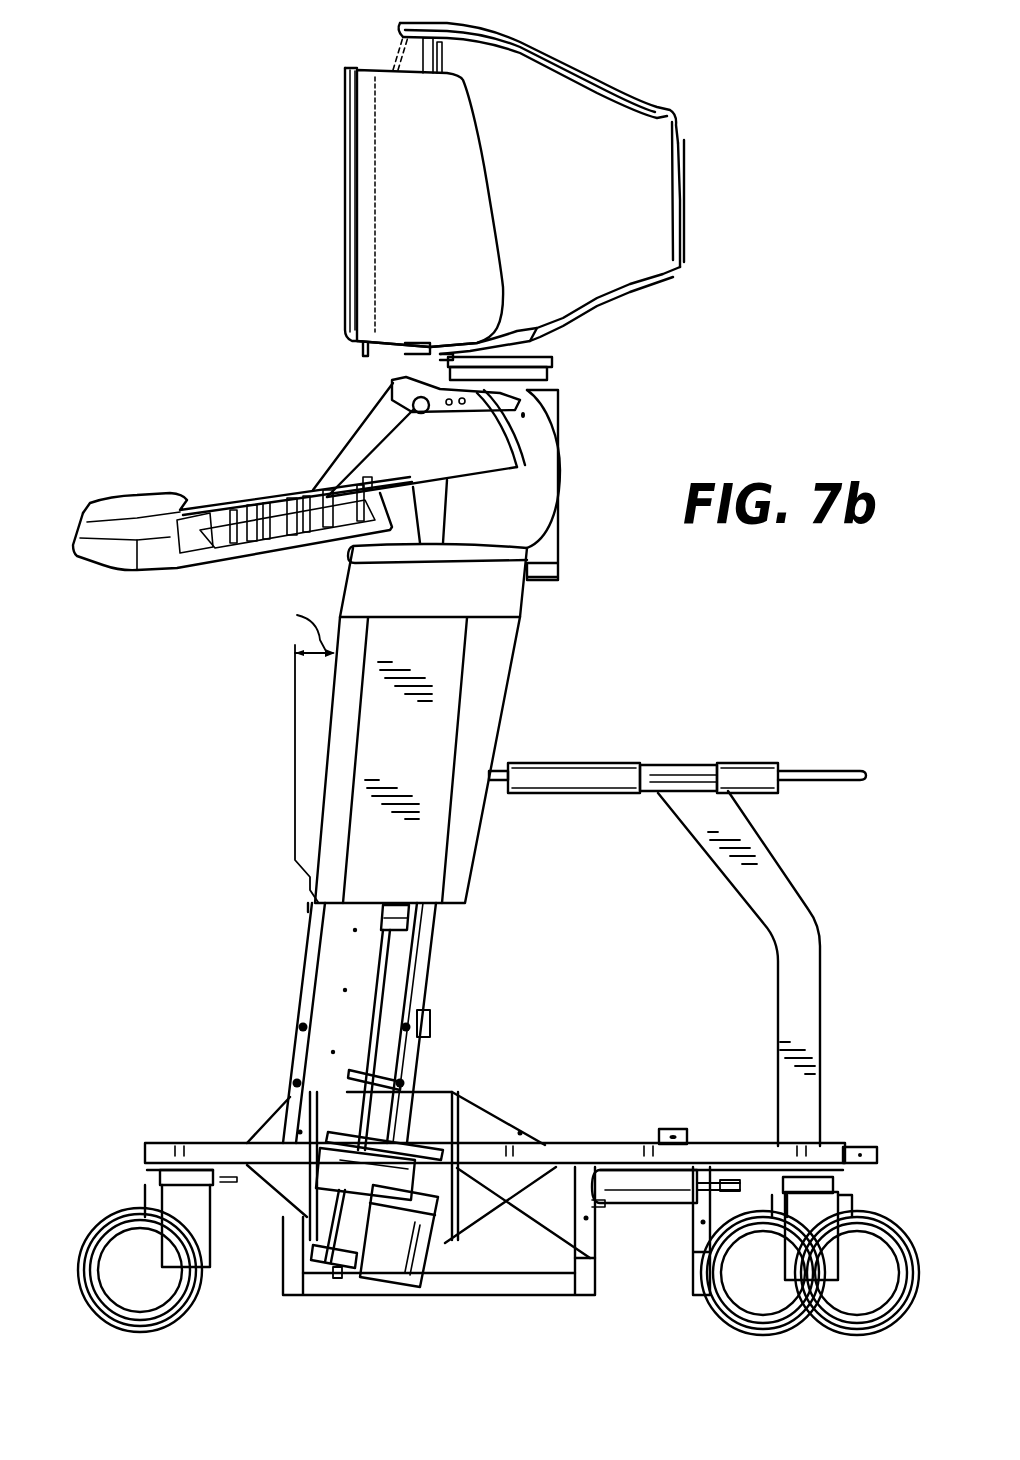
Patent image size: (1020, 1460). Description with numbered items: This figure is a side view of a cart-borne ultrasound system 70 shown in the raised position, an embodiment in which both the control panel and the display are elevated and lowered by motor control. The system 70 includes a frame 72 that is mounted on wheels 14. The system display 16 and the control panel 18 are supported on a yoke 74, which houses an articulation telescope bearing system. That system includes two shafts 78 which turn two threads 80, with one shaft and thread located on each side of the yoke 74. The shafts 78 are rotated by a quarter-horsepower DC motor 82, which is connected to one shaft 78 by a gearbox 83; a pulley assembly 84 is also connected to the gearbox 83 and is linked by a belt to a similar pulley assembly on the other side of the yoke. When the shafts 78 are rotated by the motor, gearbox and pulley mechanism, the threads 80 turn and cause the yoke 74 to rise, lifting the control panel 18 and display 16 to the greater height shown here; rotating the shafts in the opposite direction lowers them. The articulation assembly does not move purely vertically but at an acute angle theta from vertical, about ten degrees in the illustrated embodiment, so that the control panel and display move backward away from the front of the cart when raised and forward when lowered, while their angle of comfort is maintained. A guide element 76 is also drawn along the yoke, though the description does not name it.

The cart-borne ultrasound system 70 is at (226, 260).
The system display 16 is at (358, 108).
The control panel 18 is at (240, 503).
The yoke 74 is at (493, 685).
The frame 72 is at (610, 775).
The column rail 76 is at (313, 965).
The shaft 78 is at (387, 982).
The thread 80 is at (402, 912).
The DC motor 82 is at (413, 1247).
The gearbox 83 is at (407, 1180).
The pulley assembly 84 is at (338, 1268).
The wheels 14 is at (123, 1253).